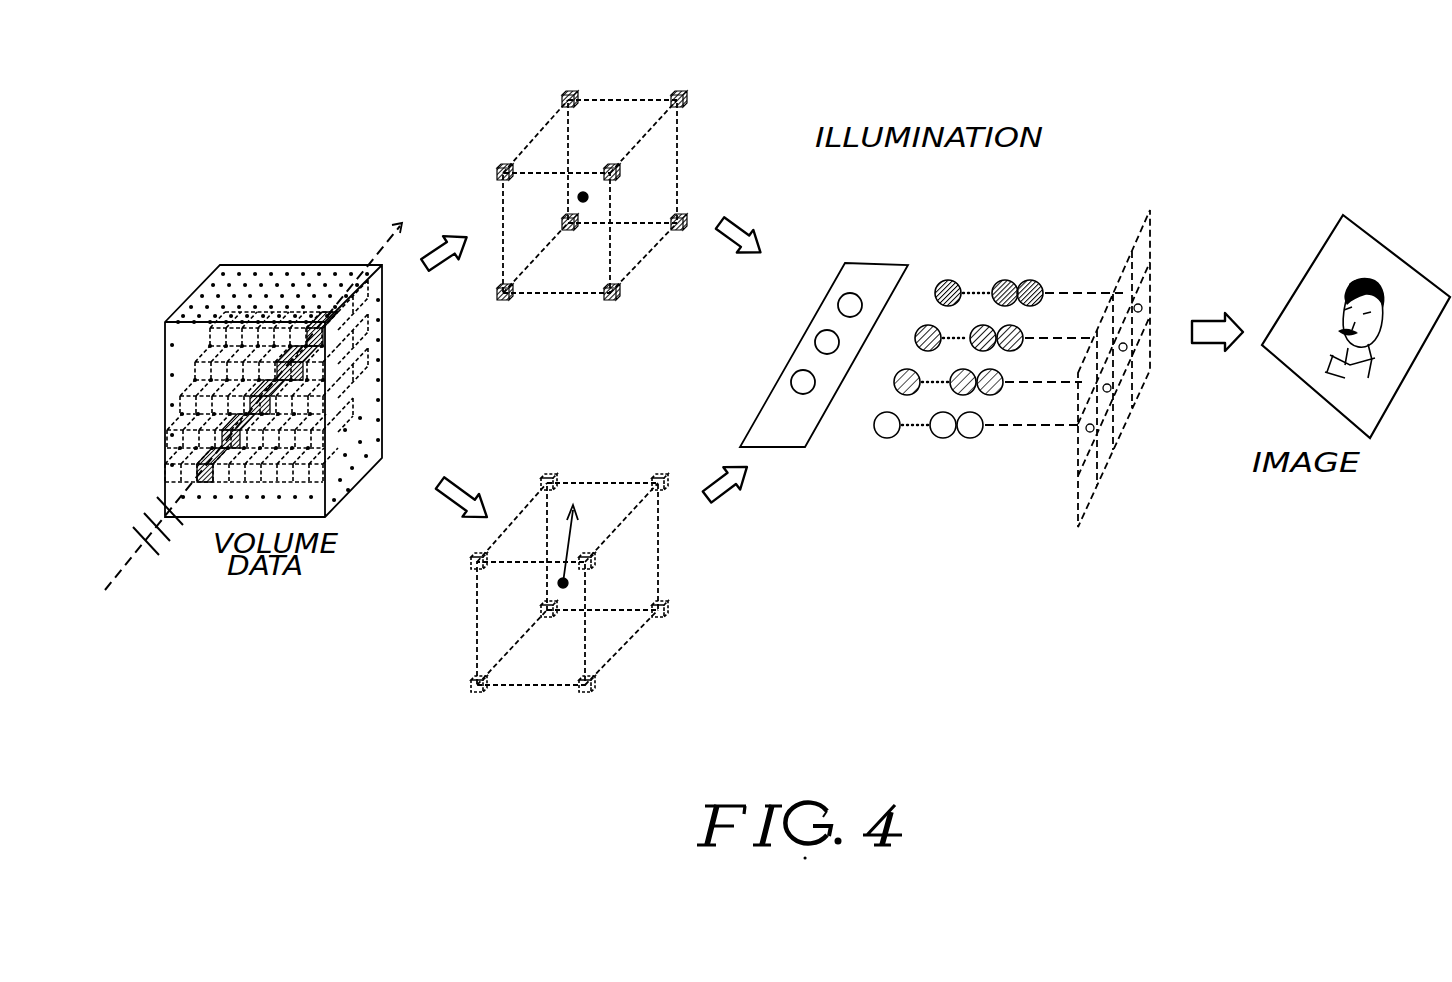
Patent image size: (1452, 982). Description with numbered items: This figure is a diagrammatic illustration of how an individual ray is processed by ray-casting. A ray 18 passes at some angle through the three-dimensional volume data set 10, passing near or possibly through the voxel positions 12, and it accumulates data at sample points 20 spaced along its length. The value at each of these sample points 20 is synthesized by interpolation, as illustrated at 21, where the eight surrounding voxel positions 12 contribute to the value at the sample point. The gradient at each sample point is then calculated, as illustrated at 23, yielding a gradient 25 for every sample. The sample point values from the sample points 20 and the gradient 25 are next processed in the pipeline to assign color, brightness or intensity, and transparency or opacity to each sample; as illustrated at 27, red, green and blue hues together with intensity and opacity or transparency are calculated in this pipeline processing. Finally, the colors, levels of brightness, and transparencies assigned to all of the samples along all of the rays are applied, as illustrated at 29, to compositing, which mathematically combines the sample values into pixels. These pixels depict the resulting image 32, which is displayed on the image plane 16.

The three-dimensional volume data set 10 is at (306, 371).
The voxel positions 12 is at (260, 277).
The image plane 16 is at (1303, 380).
The ray 18 is at (128, 556).
The sample points 20 is at (383, 251).
The interpolation 21 is at (655, 168).
The gradient estimation 23 is at (567, 618).
The gradient 25 is at (573, 527).
The illumination processing 27 is at (888, 256).
The compositing 29 is at (981, 384).
The resulting image 32 is at (1343, 282).